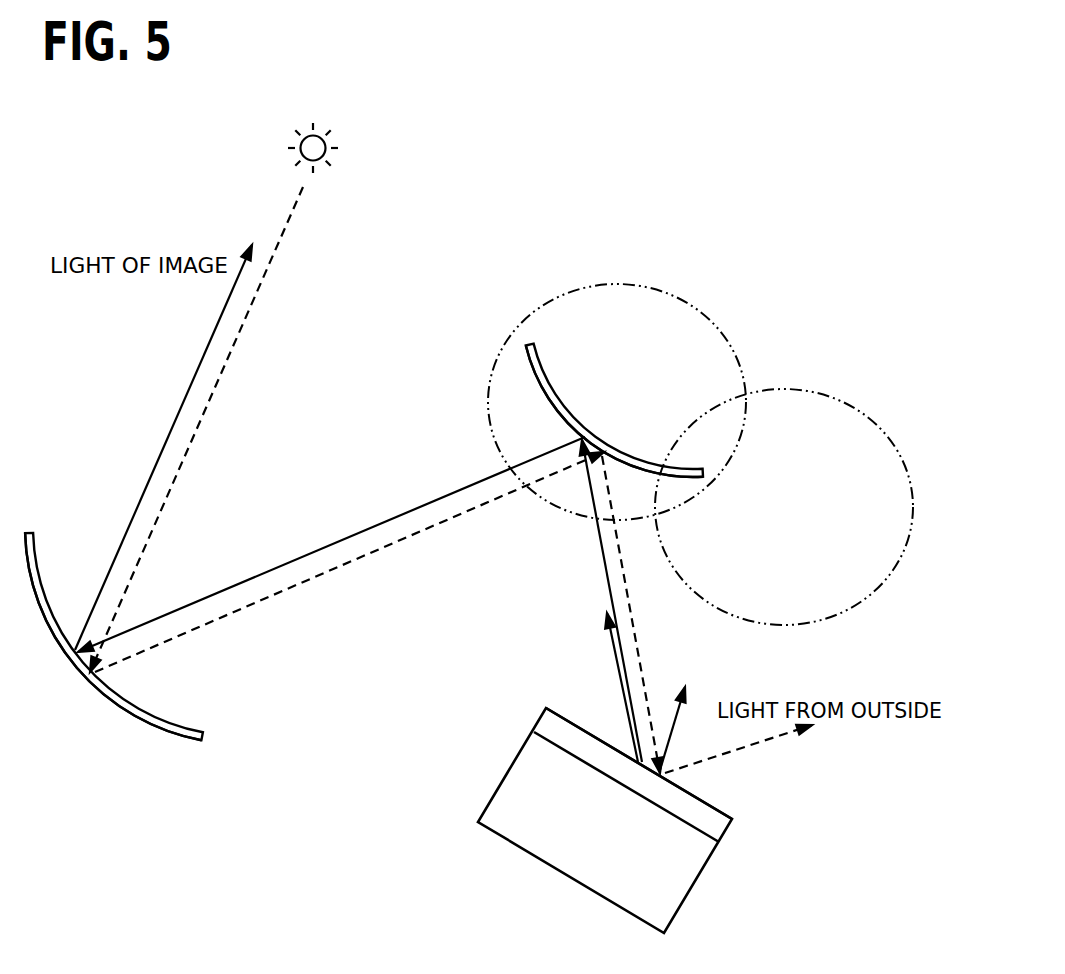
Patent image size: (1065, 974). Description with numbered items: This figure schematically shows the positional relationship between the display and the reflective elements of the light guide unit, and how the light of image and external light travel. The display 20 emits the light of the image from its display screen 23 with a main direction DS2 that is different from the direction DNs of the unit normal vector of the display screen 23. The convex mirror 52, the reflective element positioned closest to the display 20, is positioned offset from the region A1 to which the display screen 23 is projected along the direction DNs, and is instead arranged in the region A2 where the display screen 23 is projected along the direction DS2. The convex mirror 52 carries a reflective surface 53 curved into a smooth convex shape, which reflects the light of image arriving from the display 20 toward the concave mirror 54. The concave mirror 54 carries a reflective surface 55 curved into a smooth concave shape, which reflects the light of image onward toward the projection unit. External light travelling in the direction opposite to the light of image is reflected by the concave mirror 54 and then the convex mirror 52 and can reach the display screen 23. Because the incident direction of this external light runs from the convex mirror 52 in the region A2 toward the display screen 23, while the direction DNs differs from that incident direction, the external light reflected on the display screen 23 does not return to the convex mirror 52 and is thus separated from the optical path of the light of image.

The display 20 is at (687, 900).
The display screen 23 is at (703, 798).
The convex mirror 52 is at (547, 375).
The reflective surface 53 is at (540, 393).
The concave mirror 54 is at (125, 728).
The reflective surface 55 is at (168, 720).
The region A1 is at (797, 390).
The region A2 is at (632, 283).
The main direction DS2 is at (595, 680).
The direction of the unit normal vector DNs is at (684, 711).